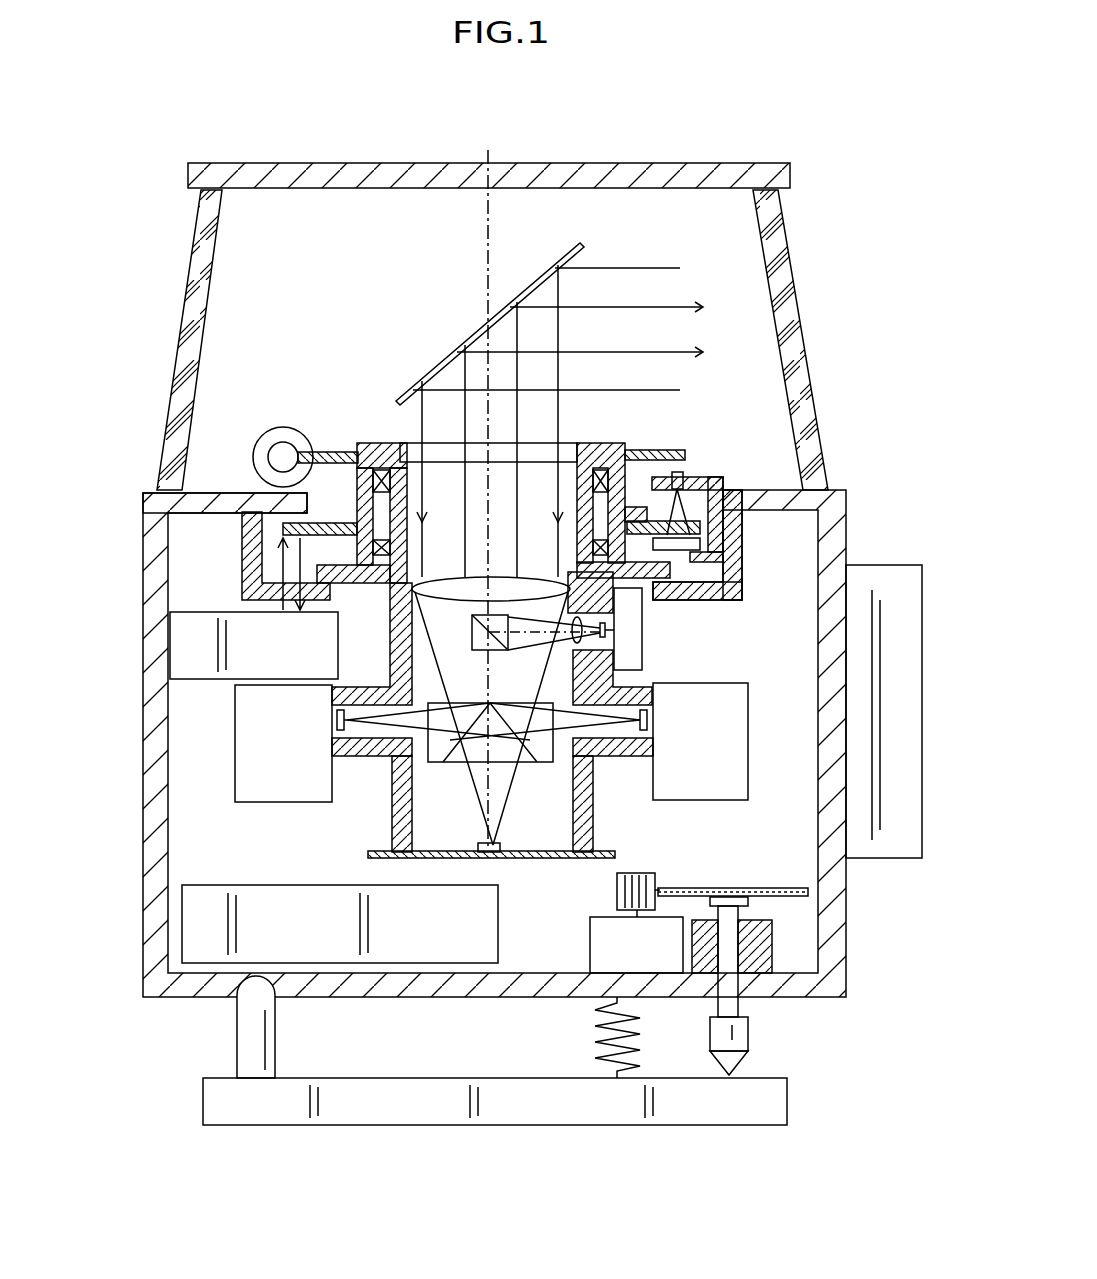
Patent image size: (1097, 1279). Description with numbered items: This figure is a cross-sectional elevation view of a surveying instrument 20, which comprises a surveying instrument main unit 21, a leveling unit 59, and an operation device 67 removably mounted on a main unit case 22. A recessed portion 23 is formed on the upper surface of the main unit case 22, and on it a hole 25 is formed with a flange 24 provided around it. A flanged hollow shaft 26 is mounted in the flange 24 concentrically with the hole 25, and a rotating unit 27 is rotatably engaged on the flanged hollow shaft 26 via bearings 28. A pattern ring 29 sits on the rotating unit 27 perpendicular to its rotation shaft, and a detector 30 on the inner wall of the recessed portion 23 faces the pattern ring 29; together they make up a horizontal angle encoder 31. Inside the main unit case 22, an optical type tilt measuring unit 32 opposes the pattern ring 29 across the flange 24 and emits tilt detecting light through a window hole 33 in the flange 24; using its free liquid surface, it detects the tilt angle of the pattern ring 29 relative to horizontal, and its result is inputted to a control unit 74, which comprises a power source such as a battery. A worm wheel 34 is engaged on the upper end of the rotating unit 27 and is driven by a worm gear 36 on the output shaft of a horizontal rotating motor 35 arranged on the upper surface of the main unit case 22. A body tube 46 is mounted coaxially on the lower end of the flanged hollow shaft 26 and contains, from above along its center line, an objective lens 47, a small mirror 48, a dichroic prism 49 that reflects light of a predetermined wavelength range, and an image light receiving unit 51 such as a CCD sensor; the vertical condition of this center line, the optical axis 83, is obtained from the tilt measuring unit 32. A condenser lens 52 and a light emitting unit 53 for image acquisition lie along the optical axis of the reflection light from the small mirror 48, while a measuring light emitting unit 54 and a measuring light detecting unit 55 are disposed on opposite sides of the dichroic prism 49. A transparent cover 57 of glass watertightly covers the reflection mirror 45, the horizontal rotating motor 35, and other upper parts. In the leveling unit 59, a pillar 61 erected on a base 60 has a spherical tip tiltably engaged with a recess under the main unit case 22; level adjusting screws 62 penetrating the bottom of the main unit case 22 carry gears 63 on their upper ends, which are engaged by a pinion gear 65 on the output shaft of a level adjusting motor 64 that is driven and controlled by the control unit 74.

The surveying instrument 20 is at (133, 256).
The surveying instrument main unit 21 is at (143, 740).
The main unit case 22 is at (143, 540).
The recessed portion 23 is at (733, 560).
The flange 24 is at (680, 600).
The hole 25 is at (283, 460).
The flanged hollow shaft 26 is at (344, 500).
The rotating unit 27 is at (613, 442).
The bearings 28 is at (592, 465).
The pattern ring 29 is at (700, 490).
The detector 30 is at (688, 472).
The horizontal angle encoder 31 is at (735, 472).
The tilt measuring unit 32 is at (335, 651).
The window hole 33 is at (245, 572).
The worm wheel 34 is at (300, 445).
The horizontal rotating motor 35 is at (262, 432).
The worm gear 36 is at (268, 455).
The reflection mirror 45 is at (548, 283).
The body tube 46 is at (590, 820).
The objective lens 47 is at (443, 570).
The small mirror 48 is at (472, 637).
The dichroic prism 49 is at (393, 813).
The image light receiving unit 51 is at (505, 840).
The condenser lens 52 is at (643, 645).
The light emitting unit for image acquisition 53 is at (645, 638).
The measuring light emitting unit 54 is at (235, 787).
The measuring light detecting unit 55 is at (748, 775).
The cover 57 is at (672, 165).
The leveling unit 59 is at (770, 1058).
The base 60 is at (787, 1100).
The pillar 61 is at (237, 1015).
The level adjusting screws 62 is at (748, 1005).
The gears 63 is at (787, 888).
The level adjusting motor 64 is at (590, 935).
The pinion gear 65 is at (615, 888).
The operation device 67 is at (885, 858).
The control unit 74 is at (182, 928).
The optical axis 83 is at (487, 262).